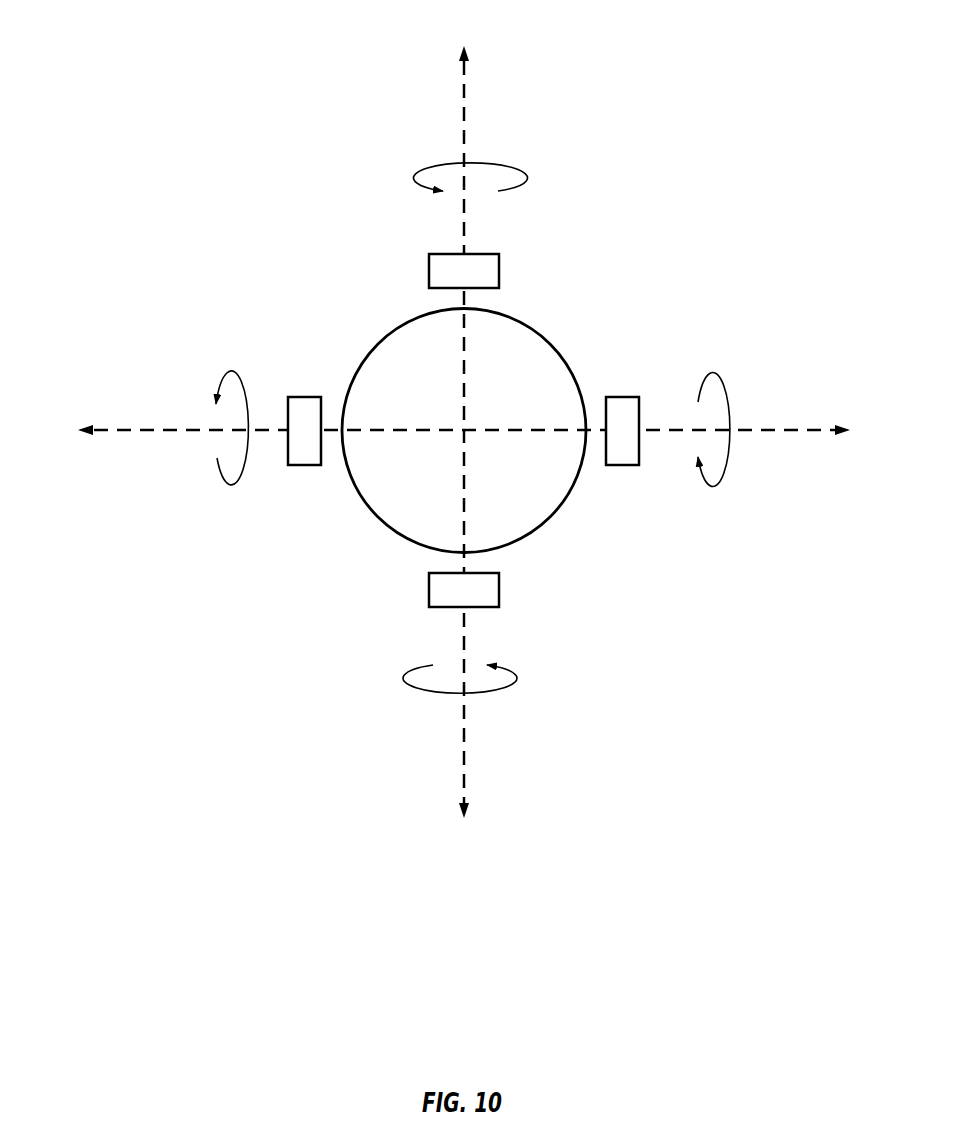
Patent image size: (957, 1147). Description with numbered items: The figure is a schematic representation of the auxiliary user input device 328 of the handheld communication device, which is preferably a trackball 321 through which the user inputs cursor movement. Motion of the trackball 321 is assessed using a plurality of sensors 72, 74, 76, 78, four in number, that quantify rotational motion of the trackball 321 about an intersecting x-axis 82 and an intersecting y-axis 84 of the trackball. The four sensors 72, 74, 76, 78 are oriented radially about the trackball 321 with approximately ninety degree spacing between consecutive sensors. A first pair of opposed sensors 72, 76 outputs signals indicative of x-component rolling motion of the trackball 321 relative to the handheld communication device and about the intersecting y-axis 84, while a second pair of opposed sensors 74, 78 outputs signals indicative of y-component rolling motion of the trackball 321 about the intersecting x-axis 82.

The auxiliary user input device 328 is at (448, 417).
The trackball 321 is at (552, 507).
The sensor 72 is at (621, 402).
The sensor 74 is at (495, 588).
The sensor 76 is at (303, 457).
The sensor 78 is at (433, 272).
The x-axis 82 is at (137, 427).
The y-axis 84 is at (469, 107).